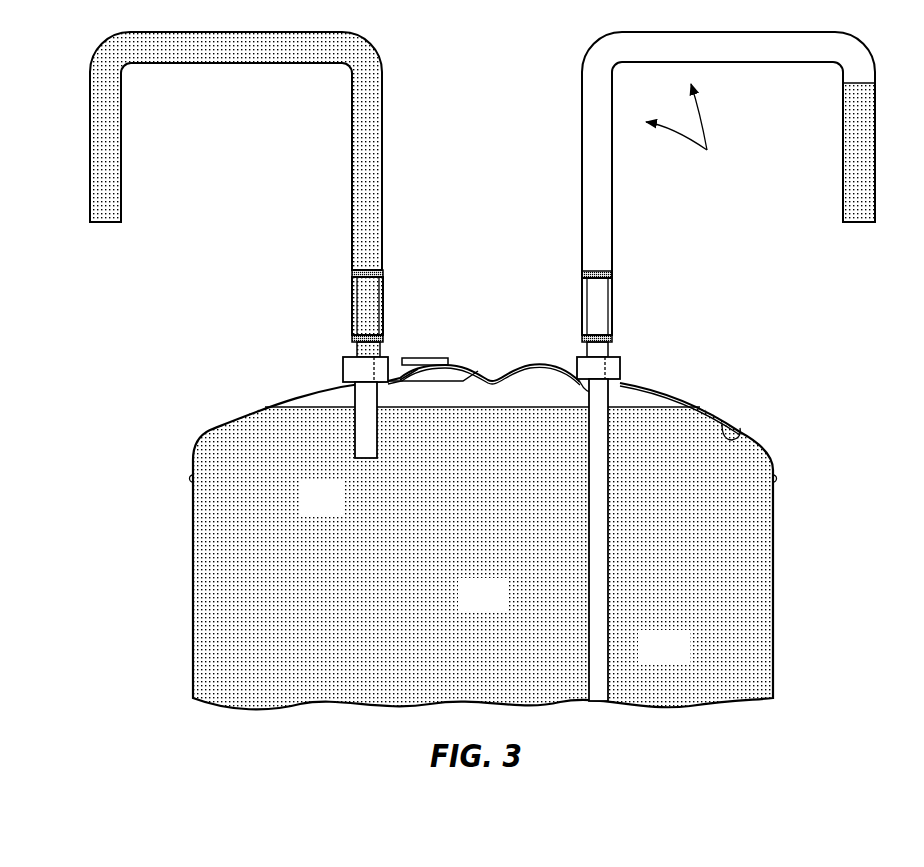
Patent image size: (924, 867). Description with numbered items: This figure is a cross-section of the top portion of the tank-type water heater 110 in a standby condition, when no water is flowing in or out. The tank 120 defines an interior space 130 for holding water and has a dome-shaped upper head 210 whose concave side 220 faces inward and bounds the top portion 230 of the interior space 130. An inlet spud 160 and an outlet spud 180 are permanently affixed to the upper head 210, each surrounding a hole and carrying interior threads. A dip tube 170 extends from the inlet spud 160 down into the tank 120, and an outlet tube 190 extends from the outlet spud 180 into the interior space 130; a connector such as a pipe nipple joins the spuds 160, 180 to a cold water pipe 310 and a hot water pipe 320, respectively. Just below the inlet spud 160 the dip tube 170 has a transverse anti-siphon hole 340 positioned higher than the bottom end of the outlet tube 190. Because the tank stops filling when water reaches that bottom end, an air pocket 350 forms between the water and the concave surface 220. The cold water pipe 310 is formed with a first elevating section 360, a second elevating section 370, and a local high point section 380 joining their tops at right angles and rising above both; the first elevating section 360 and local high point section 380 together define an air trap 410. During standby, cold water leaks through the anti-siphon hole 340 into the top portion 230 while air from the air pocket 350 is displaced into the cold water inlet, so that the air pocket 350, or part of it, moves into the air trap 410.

The tank-type water heater 110 is at (460, 498).
The tank 120 is at (193, 548).
The interior space 130 is at (497, 604).
The inlet spud 160 is at (620, 368).
The dip tube 170 is at (604, 640).
The outlet spud 180 is at (343, 368).
The outlet tube 190 is at (354, 456).
The upper head 210 is at (715, 410).
The concave side 220 is at (738, 428).
The top portion 230 is at (228, 645).
The cold water pipe 310 is at (698, 162).
The hot water pipe 320 is at (189, 242).
The anti-siphon hole 340 is at (575, 384).
The air pocket 350 is at (498, 388).
The first elevating section 360 is at (582, 118).
The second elevating section 370 is at (843, 165).
The local high point section 380 is at (738, 64).
The air trap 410 is at (692, 129).